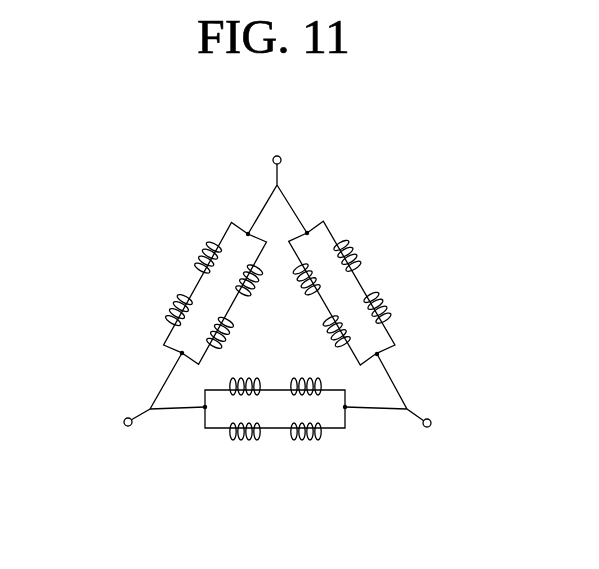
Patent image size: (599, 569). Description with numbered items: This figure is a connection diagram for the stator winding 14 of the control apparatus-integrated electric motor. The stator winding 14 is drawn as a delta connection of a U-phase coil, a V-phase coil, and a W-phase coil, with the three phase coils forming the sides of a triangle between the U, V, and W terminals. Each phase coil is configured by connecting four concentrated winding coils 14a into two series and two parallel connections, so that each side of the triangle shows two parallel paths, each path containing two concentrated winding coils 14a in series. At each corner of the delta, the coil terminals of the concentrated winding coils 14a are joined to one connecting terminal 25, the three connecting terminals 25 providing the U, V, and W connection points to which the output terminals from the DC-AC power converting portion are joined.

The stator winding 14 is at (161, 168).
The concentrated winding coil 14a is at (385, 300).
The connecting terminal 25 is at (283, 174).